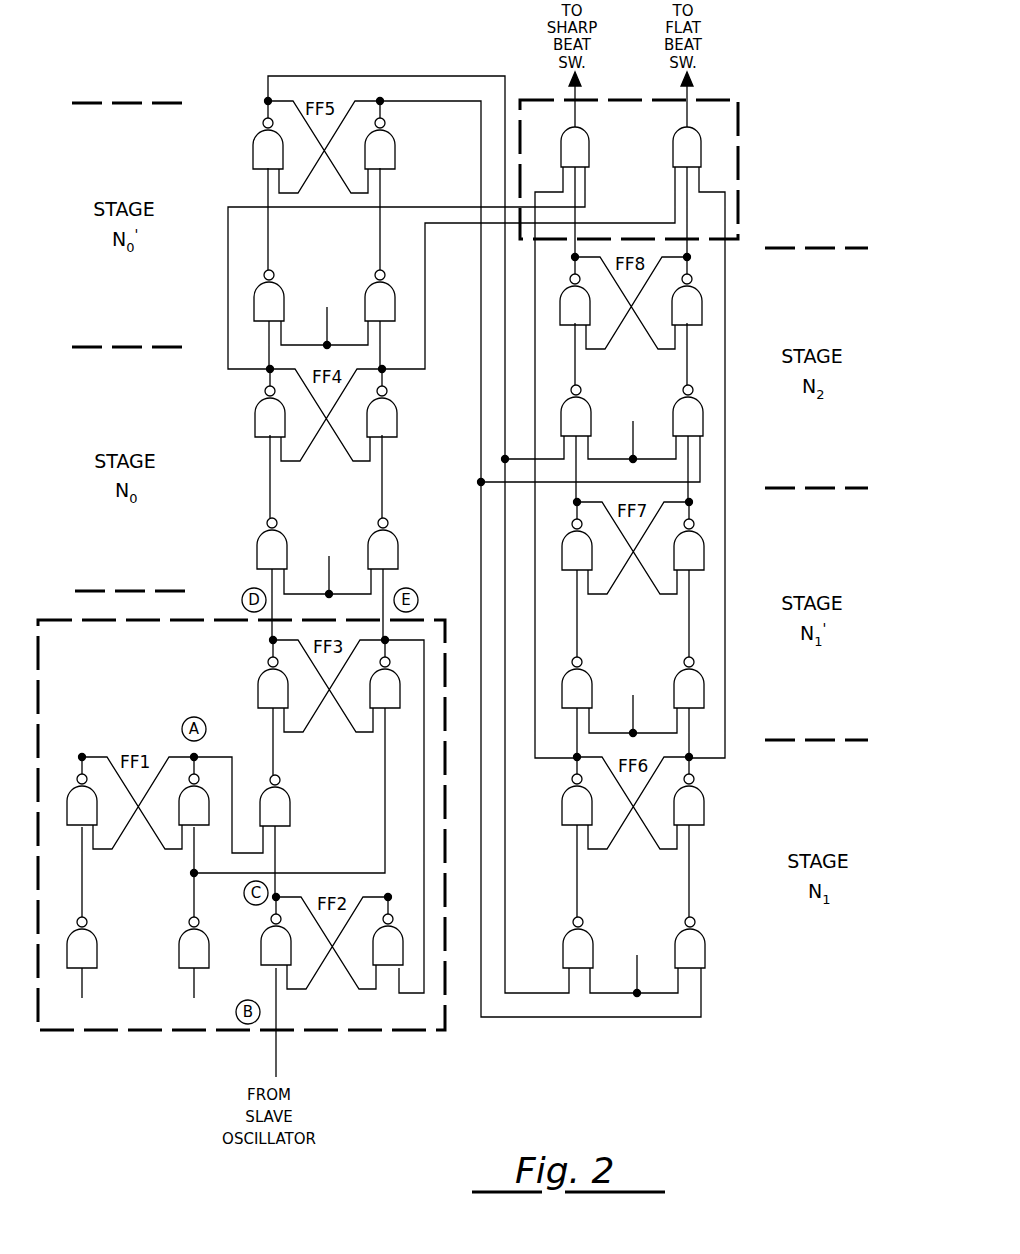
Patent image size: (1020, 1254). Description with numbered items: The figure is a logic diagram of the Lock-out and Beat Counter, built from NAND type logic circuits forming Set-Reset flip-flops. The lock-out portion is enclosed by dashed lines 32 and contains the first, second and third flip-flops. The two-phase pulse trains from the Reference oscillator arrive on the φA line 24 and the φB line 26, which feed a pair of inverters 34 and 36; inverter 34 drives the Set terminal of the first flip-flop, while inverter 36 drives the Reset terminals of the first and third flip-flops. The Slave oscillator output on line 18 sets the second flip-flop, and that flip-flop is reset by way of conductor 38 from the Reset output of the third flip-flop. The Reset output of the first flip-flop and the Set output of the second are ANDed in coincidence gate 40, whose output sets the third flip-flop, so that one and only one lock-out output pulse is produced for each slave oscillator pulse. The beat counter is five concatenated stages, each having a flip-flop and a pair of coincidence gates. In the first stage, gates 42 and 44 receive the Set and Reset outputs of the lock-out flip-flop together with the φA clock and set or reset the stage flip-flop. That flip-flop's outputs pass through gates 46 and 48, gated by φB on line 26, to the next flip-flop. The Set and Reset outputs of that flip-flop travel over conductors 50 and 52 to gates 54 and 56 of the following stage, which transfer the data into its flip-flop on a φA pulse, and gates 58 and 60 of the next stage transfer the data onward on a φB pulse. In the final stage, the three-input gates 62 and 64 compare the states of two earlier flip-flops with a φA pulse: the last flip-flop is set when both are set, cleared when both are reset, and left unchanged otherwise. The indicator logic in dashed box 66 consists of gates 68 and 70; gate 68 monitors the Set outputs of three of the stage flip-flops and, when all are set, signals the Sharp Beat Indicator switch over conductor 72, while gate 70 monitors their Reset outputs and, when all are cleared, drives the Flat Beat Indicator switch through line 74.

The line 18 is at (276, 1058).
The φA line 24 is at (330, 578).
The φB line 26 is at (328, 327).
The dashed lines 32 is at (60, 618).
The inverter 34 is at (94, 936).
The inverter 36 is at (182, 936).
The conductor 38 is at (385, 790).
The coincidence gate 40 is at (287, 794).
The gate 42 is at (284, 537).
The gate 44 is at (371, 537).
The gate 46 is at (281, 289).
The gate 48 is at (368, 289).
The conductor 50 is at (432, 76).
The conductor 52 is at (420, 102).
The gate 54 is at (590, 936).
The gate 56 is at (678, 936).
The gate 58 is at (589, 676).
The gate 60 is at (677, 676).
The gate 62 is at (588, 404).
The gate 64 is at (676, 404).
The dashed lined box 66 is at (739, 117).
The gate 68 is at (588, 132).
The gate 70 is at (673, 152).
The conductor 72 is at (577, 89).
The line 74 is at (689, 89).